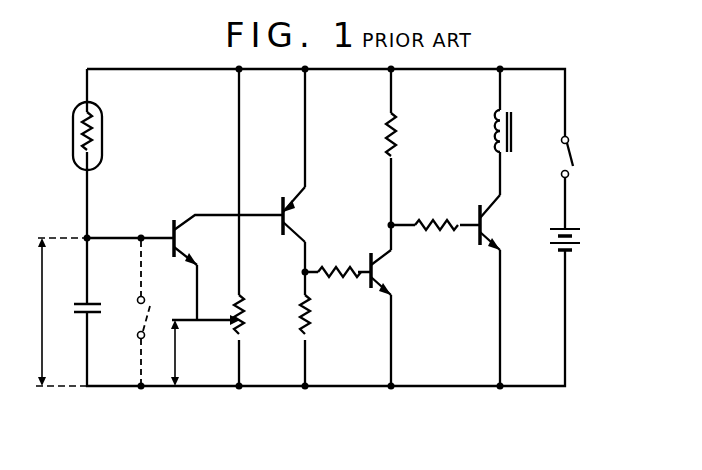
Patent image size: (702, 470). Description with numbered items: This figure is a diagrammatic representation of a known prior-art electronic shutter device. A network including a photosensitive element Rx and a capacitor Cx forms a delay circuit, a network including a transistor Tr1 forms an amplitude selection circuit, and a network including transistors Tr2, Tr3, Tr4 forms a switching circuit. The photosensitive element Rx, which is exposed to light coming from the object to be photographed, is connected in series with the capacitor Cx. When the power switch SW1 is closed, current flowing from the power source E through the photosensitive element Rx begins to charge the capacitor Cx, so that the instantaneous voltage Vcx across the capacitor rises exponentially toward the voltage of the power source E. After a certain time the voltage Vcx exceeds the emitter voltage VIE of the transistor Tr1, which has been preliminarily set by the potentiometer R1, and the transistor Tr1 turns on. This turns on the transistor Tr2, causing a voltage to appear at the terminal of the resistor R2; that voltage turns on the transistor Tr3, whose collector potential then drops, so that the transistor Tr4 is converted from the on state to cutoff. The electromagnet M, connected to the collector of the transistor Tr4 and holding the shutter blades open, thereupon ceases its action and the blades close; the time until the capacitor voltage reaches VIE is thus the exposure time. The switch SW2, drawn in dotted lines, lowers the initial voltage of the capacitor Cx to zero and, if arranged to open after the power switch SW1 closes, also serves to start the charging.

The photosensitive element Rx is at (102, 140).
The capacitor Cx is at (90, 301).
The switch SW2 is at (151, 312).
The instantaneous voltage across the capacitor Vcx is at (38, 312).
The emitter voltage of the transistor VIE is at (168, 353).
The transistor Tr1 is at (177, 242).
The transistor Tr2 is at (286, 217).
The transistor Tr3 is at (374, 273).
The transistor Tr4 is at (483, 228).
The potentiometer R1 is at (246, 325).
The resistor R2 is at (312, 325).
The electromagnet M is at (513, 133).
The power switch SW1 is at (574, 160).
The power source E is at (578, 235).